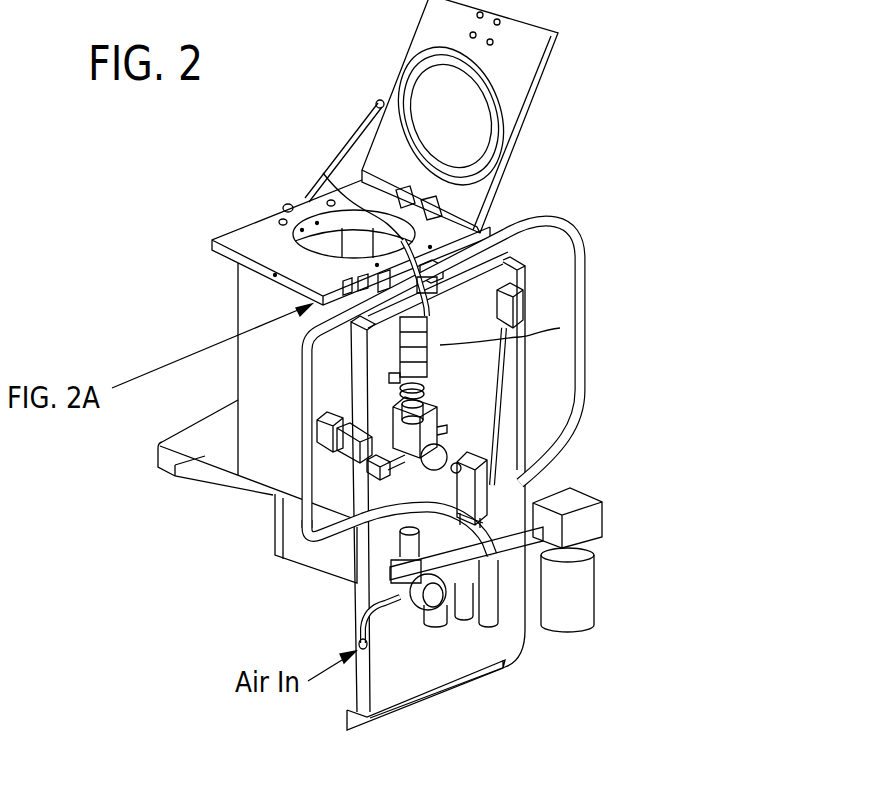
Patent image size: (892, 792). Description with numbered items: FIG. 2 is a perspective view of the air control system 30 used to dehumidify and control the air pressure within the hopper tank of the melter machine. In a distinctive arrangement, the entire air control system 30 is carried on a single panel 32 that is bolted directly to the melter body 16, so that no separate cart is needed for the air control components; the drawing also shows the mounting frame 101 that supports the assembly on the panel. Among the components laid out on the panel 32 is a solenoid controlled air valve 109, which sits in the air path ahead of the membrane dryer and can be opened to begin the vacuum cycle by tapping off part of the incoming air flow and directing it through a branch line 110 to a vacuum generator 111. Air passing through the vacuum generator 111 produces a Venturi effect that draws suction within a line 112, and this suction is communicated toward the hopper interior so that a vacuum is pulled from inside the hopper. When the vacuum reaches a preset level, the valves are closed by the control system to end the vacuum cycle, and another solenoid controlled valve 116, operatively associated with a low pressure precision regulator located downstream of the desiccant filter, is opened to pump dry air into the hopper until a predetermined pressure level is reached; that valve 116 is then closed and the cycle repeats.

The melter body 16 is at (248, 300).
The air control system 30 is at (657, 615).
The panel 32 is at (443, 663).
The mounting frame 101 is at (303, 397).
The solenoid controlled air valve 109 is at (353, 585).
The branch line 110 is at (492, 403).
The vacuum generator 111 is at (513, 300).
The line 112 is at (560, 328).
The solenoid controlled valve 116 is at (323, 173).